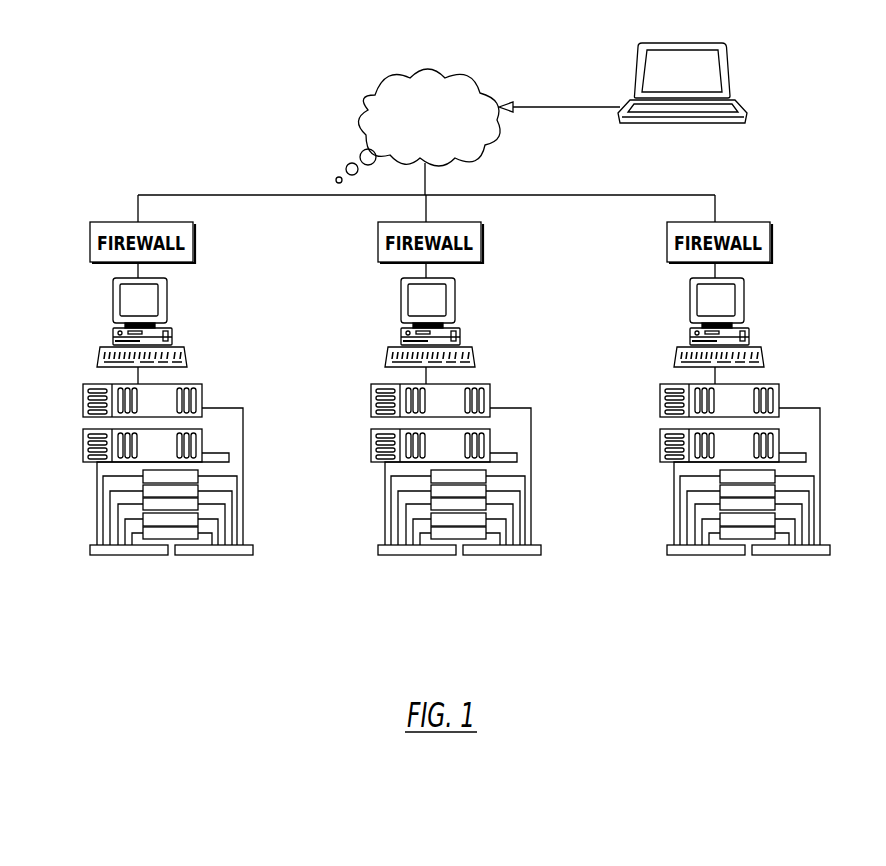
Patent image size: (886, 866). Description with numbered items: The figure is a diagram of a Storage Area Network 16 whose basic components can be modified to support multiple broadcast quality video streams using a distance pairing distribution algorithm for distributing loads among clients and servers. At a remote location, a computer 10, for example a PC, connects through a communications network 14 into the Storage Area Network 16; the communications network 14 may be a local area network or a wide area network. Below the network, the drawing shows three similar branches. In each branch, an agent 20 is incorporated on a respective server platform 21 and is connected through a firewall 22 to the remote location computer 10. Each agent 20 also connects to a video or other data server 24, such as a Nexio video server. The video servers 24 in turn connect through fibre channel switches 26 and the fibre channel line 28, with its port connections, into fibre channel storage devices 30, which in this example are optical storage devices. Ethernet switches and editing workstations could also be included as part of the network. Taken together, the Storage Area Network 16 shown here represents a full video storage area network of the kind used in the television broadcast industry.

The computer 10 is at (727, 74).
The communications network 14 is at (478, 134).
The Storage Area Network 16 is at (811, 264).
The agent 20 is at (168, 307).
The server platform 21 is at (417, 316).
The firewall 22 is at (194, 243).
The video server 24 is at (186, 383).
The fibre channel switch 26 is at (110, 551).
The fibre channel line 28 is at (245, 458).
The fibre channel storage device 30 is at (170, 541).